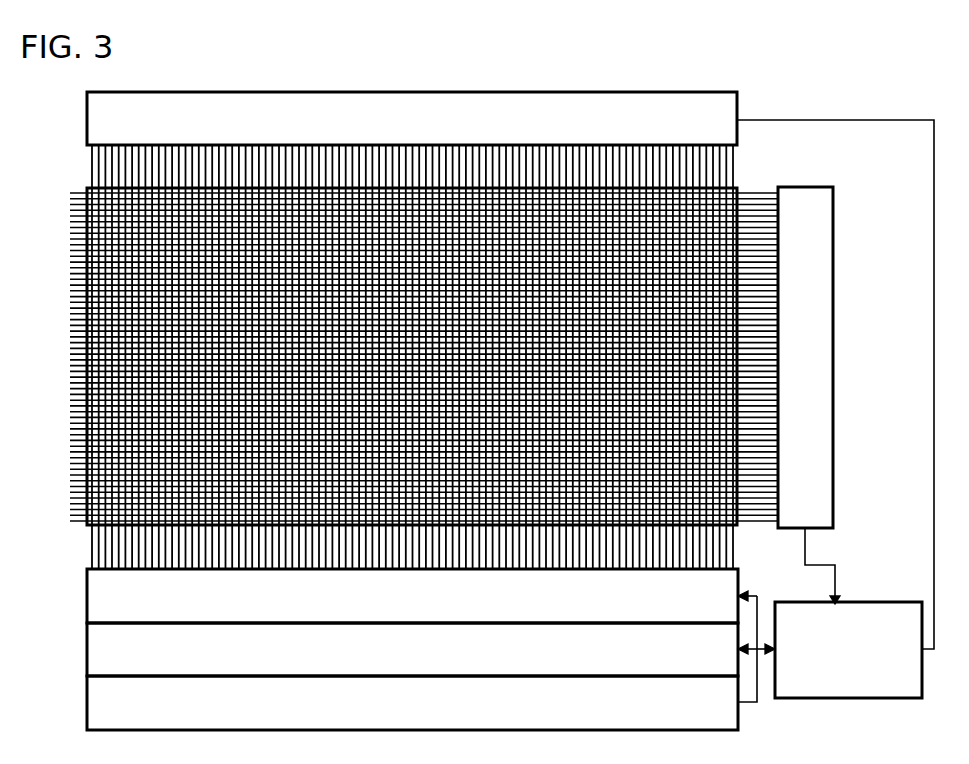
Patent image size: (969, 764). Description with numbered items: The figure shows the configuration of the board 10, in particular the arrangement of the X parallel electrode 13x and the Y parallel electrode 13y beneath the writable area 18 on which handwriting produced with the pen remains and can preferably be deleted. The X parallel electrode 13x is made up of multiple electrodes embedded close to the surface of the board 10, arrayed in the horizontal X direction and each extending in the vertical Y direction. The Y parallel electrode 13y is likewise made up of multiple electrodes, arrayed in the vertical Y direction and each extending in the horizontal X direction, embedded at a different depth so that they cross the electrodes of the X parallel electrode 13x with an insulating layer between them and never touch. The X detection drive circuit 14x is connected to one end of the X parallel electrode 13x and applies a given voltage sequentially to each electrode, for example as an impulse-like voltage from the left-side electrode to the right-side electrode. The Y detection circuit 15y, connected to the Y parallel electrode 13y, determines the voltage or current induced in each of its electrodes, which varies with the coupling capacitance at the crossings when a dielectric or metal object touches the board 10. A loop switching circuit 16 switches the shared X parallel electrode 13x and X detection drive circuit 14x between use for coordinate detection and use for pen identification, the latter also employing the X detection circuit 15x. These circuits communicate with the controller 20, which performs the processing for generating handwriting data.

The board 10 is at (846, 61).
The X parallel electrode 13x is at (87, 186).
The Y parallel electrode 13y is at (737, 188).
The X detection drive circuit 14x is at (87, 598).
The X detection circuit 15x is at (87, 704).
The Y detection circuit 15y is at (812, 187).
The loop switching circuit 16 is at (512, 91).
The writable area 18 is at (87, 528).
The controller 20 is at (857, 602).